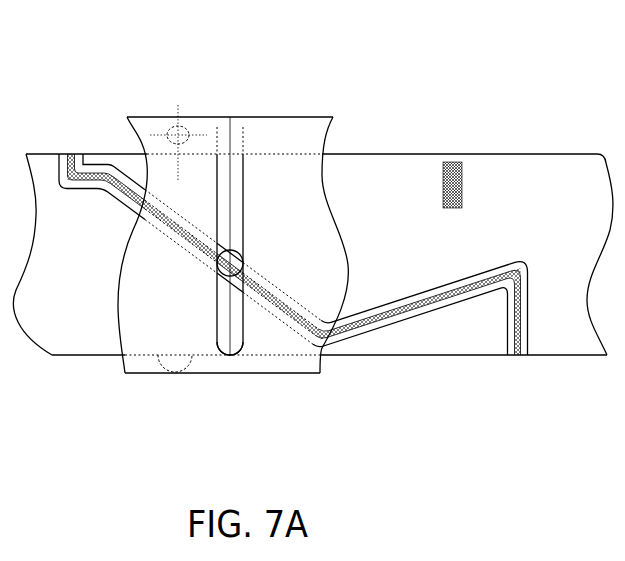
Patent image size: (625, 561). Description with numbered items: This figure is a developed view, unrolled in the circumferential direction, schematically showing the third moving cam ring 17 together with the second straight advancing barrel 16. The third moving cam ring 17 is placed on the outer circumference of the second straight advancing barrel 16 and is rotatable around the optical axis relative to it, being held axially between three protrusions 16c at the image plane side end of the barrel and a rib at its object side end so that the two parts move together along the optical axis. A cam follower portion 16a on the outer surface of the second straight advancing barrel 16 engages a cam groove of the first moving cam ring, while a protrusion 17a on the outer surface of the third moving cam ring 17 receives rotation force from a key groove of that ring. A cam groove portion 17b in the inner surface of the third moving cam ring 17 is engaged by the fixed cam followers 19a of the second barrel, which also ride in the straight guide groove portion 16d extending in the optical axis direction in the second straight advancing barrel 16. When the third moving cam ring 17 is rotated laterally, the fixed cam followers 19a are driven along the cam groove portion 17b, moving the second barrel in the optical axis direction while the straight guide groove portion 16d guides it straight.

The second straight advancing barrel 16 is at (297, 362).
The cam follower portion 16a is at (171, 130).
The protrusions 16c is at (175, 365).
The straight guide groove portion 16d is at (244, 220).
The third moving cam ring 17 is at (397, 188).
The protrusion 17a is at (460, 176).
The cam groove portion 17b is at (108, 135).
The fixed cam followers 19a is at (233, 368).